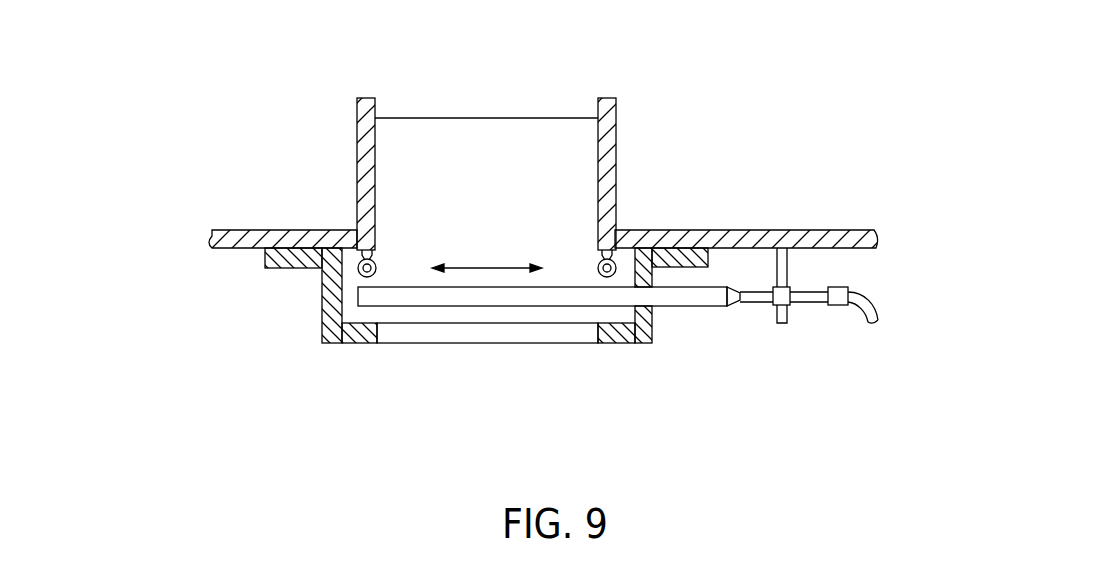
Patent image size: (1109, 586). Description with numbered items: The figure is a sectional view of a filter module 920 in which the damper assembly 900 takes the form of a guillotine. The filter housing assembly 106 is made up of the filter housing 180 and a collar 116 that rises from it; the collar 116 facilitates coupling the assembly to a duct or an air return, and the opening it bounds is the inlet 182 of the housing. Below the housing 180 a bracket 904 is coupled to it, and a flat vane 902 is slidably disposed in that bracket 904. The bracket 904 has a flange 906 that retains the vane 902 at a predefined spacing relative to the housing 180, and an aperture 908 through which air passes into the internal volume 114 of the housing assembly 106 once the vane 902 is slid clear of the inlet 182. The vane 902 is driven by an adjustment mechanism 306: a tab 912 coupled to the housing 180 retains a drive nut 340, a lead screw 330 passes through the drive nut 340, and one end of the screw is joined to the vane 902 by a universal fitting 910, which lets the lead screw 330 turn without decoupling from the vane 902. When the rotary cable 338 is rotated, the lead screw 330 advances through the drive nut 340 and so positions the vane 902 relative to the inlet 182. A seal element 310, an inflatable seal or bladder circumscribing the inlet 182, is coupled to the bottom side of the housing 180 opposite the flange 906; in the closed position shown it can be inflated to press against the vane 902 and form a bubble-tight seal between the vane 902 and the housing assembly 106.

The filter housing assembly 106 is at (235, 222).
The filter housing 180 is at (295, 238).
The collar 116 is at (365, 131).
The inlet 182 is at (491, 156).
The seal element 310 is at (378, 254).
The bracket 904 is at (320, 298).
The flange 906 is at (352, 345).
The aperture 908 is at (452, 354).
The damper assembly 900 is at (553, 296).
The vane 902 is at (417, 286).
The universal fitting 910 is at (735, 300).
The lead screw 330 is at (755, 302).
The drive nut 340 is at (777, 307).
The tab 912 is at (783, 324).
The adjustment mechanism 306 is at (822, 326).
The rotary cable 338 is at (880, 304).
The filter module 920 is at (760, 130).
The internal volume 114 is at (533, 402).